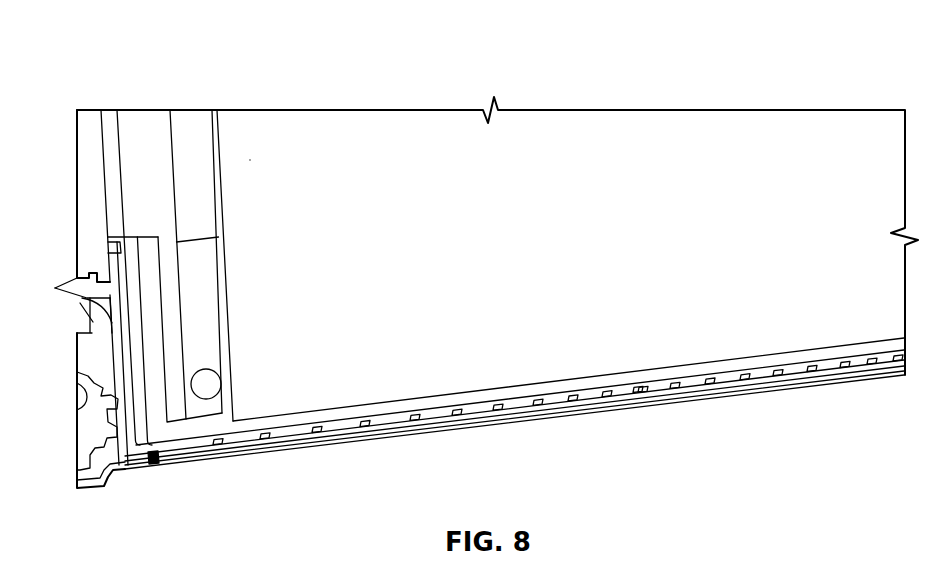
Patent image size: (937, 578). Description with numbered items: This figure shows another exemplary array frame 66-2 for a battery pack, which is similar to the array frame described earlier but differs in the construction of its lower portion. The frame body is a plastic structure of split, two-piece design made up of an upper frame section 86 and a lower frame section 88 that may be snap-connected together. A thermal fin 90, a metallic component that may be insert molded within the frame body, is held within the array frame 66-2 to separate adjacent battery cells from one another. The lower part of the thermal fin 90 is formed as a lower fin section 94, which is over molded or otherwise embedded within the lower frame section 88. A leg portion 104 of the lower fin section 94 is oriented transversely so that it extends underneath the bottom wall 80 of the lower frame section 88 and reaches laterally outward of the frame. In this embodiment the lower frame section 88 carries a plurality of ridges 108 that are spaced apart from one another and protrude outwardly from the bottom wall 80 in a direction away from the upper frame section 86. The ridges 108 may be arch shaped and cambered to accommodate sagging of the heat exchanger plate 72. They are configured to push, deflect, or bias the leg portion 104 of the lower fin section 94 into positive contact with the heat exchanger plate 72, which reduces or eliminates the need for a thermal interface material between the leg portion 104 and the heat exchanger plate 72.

The array frame 66-2 is at (132, 56).
The upper frame section 86 is at (143, 183).
The lower frame section 88 is at (88, 303).
The thermal fin 90 is at (575, 225).
The bottom wall 80 is at (327, 430).
The ridges 108 is at (233, 478).
The leg portion 104 is at (489, 428).
The lower fin section 94 is at (626, 390).
The heat exchanger plate 72 is at (817, 385).